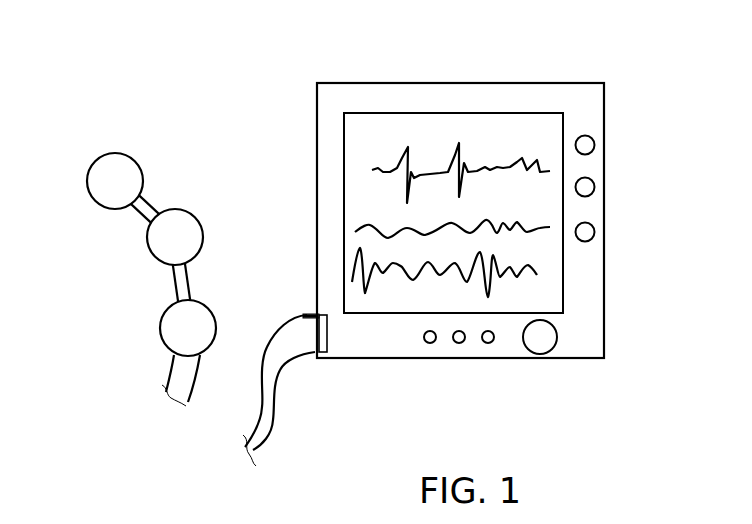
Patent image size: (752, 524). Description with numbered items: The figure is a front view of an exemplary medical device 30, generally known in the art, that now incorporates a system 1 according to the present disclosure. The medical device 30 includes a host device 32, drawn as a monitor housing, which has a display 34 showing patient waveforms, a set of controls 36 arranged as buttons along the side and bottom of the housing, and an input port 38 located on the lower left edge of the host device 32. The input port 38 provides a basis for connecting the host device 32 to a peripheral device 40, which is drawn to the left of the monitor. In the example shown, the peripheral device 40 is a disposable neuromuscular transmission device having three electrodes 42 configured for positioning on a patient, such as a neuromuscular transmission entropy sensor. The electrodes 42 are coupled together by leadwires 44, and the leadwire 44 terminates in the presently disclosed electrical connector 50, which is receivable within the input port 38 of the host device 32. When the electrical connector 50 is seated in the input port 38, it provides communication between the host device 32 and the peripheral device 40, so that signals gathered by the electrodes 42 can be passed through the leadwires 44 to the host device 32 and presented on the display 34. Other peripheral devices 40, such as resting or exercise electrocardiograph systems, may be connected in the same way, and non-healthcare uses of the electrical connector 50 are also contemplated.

The system 1 is at (261, 67).
The medical device 30 is at (625, 57).
The host device 32 is at (315, 80).
The display 34 is at (360, 140).
The controls 36 is at (595, 143).
The input port 38 is at (338, 345).
The peripheral device 40 is at (52, 167).
The electrodes 42 is at (135, 157).
The leadwires 44 is at (133, 222).
The electrical connector 50 is at (301, 304).